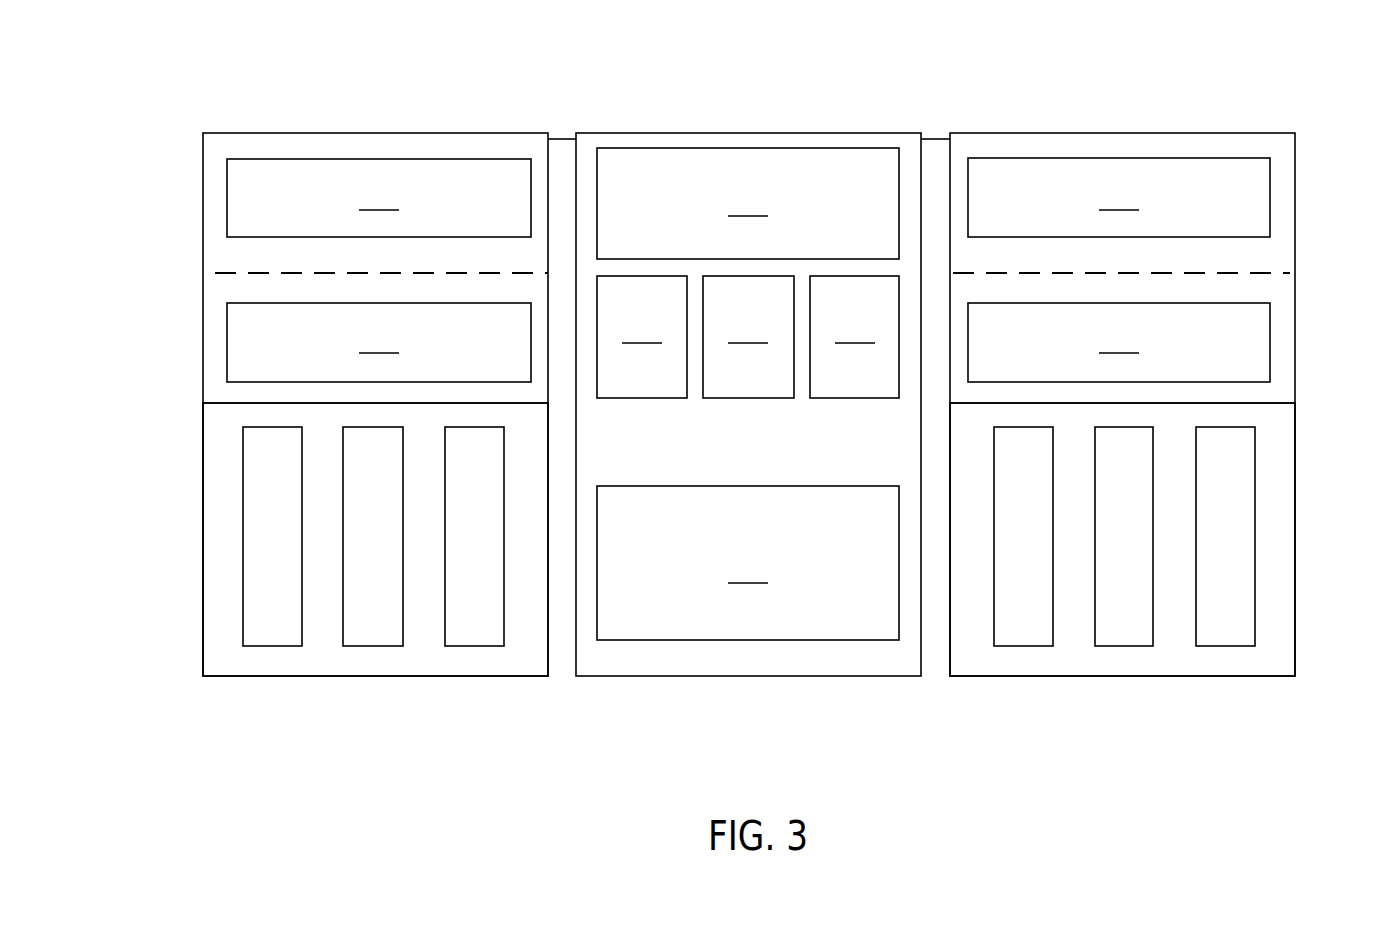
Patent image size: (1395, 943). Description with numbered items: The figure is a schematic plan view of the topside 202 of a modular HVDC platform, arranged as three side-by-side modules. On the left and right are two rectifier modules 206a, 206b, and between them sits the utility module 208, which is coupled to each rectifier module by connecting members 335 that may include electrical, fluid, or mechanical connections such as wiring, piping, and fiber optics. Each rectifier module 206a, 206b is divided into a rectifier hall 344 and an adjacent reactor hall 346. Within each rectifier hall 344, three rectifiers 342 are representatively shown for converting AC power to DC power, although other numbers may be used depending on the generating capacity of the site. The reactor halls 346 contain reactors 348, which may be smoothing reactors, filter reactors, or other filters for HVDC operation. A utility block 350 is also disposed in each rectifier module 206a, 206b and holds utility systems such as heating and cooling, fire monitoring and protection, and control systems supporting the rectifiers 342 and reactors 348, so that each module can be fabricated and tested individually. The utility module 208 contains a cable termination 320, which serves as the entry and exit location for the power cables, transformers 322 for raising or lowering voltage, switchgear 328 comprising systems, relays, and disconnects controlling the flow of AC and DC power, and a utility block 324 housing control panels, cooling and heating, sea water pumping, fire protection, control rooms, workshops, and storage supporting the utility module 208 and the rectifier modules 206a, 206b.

The topside 202 is at (150, 80).
The rectifier module 206a is at (368, 132).
The rectifier module 206b is at (1118, 132).
The utility module 208 is at (743, 132).
The connecting member 335 is at (566, 138).
The reactor hall 346 is at (215, 291).
The utility block 350 is at (748, 197).
The reactor 348 is at (748, 342).
The rectifier hall 344 is at (225, 587).
The rectifier 342 is at (272, 648).
The cable termination 320 is at (748, 203).
The transformer 322 is at (748, 337).
The switchgear 328 is at (748, 337).
The utility block 324 is at (748, 563).